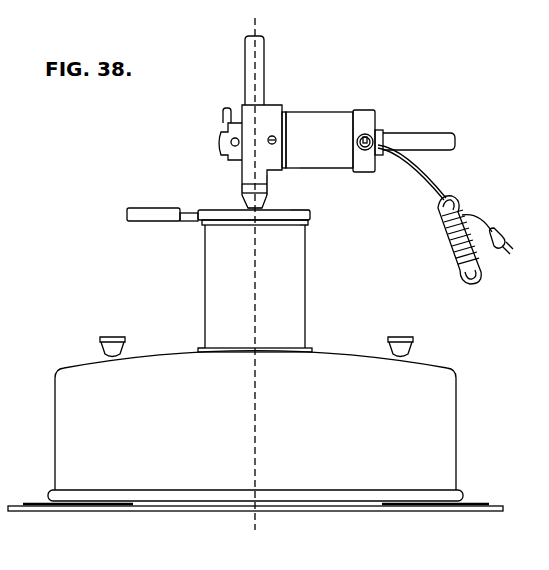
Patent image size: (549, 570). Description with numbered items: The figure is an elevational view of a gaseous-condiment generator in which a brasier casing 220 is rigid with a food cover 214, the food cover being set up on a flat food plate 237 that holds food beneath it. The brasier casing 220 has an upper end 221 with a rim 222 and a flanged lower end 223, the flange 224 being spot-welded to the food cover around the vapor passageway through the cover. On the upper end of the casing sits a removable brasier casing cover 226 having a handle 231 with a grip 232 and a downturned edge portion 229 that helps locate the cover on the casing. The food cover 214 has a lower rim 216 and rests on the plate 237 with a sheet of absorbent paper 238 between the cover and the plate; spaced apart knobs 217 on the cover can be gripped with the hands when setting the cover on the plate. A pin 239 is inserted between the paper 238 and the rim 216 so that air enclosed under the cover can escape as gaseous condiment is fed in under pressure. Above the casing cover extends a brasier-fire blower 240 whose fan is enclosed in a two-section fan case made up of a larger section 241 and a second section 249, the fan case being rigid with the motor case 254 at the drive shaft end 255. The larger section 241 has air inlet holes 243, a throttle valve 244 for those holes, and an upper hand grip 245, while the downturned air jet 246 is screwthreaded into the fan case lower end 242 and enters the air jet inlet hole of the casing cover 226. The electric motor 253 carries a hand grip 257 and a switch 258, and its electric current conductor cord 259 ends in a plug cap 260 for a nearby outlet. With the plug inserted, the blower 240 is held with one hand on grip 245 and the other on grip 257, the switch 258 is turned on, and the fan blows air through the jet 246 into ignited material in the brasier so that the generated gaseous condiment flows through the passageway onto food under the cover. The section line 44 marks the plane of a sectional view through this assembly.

The section line 44 is at (236, 22).
The food cover 214 is at (60, 408).
The lower rim 216 is at (48, 494).
The knobs 217 is at (101, 339).
The brasier casing 220 is at (307, 289).
The upper end 221 is at (310, 227).
The rim 222 is at (200, 224).
The flanged lower end 223 is at (310, 346).
The flange 224 is at (200, 346).
The brasier casing cover 226 is at (303, 212).
The downturned edge portion 229 is at (309, 222).
The handle 231 is at (186, 222).
The grip 232 is at (149, 207).
The flat food plate 237 is at (403, 512).
The sheet of absorbent paper 238 is at (482, 505).
The pin 239 is at (135, 506).
The brasier-fire blower 240 is at (242, 110).
The larger fan case section 241 is at (266, 162).
The fan case lower end 242 is at (240, 181).
The air inlet holes 243 is at (220, 150).
The throttle valve 244 is at (226, 126).
The upper hand grip 245 is at (265, 56).
The air jet 246 is at (246, 206).
The fan case section 249 is at (286, 125).
The electric motor 253 is at (364, 111).
The motor case 254 is at (340, 170).
The drive shaft end 255 is at (285, 115).
The hand grip 257 is at (438, 133).
The switch 258 is at (369, 132).
The electric current conductor cord 259 is at (432, 180).
The plug cap 260 is at (502, 233).